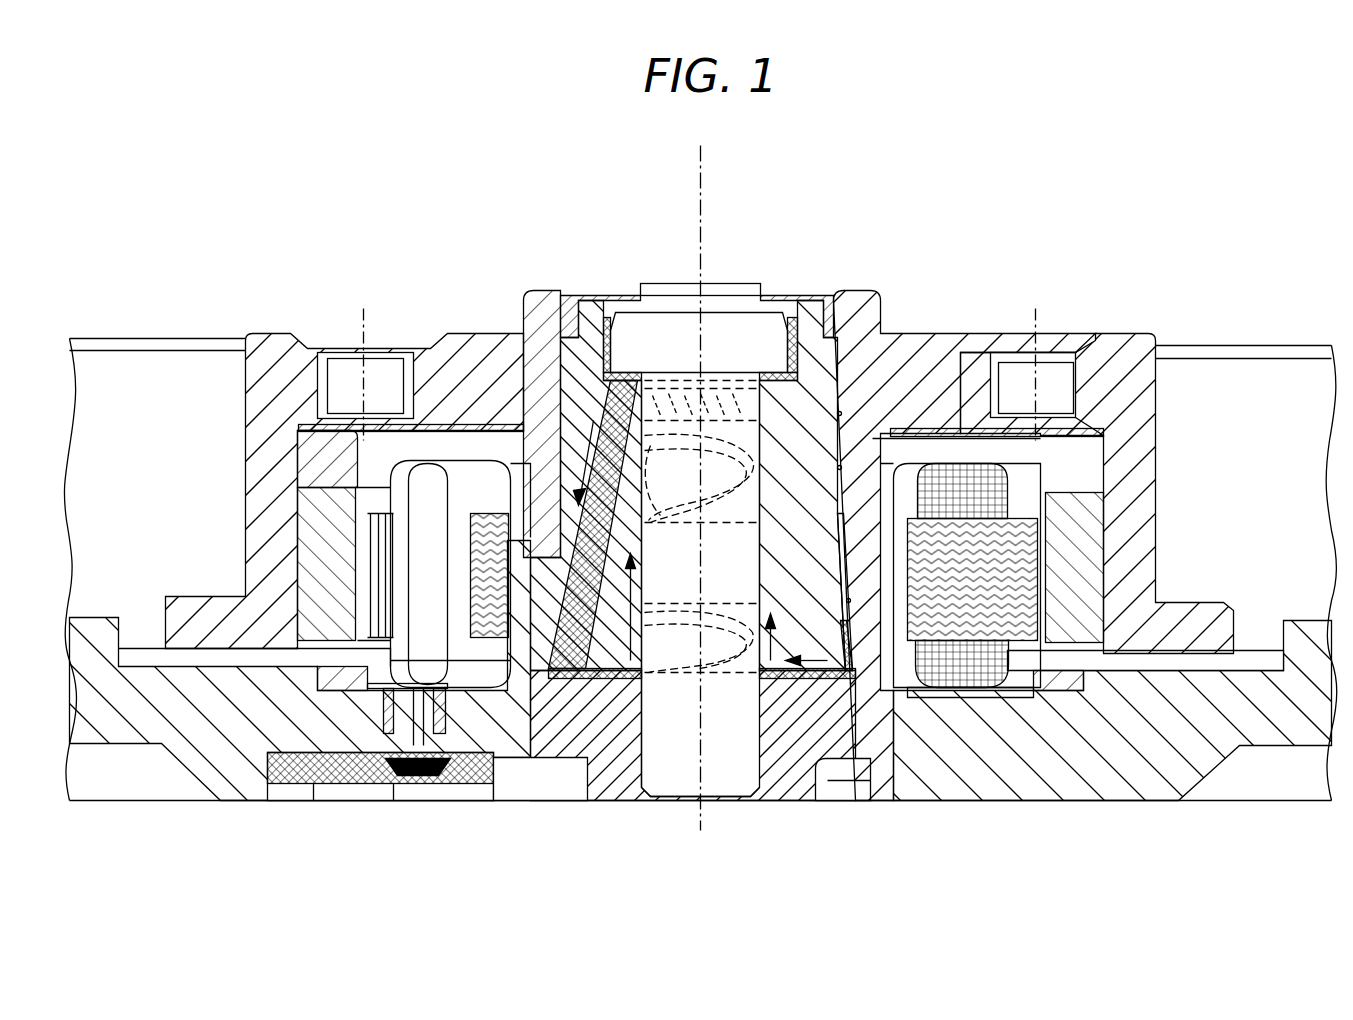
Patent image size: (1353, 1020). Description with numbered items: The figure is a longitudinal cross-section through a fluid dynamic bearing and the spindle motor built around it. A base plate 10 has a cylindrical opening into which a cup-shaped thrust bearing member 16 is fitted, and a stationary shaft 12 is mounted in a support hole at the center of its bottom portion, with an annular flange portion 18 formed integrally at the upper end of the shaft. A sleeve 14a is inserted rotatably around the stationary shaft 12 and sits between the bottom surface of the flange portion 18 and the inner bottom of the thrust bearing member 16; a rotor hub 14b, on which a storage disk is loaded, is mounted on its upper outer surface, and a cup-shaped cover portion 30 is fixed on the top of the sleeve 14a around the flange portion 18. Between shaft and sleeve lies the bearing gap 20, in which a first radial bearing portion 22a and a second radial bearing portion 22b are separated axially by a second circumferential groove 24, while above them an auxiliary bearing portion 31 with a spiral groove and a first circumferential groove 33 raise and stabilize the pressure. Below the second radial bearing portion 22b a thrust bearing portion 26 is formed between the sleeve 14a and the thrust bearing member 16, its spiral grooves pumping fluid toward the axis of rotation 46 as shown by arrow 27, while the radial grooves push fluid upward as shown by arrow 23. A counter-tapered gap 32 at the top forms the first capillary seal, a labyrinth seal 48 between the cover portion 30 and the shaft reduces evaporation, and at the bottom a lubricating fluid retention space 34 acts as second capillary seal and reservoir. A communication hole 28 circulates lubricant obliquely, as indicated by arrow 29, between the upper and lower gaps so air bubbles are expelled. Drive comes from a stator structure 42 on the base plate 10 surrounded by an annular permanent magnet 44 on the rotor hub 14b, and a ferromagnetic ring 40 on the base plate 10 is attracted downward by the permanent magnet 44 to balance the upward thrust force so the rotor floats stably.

The base plate 10 is at (1123, 787).
The stationary shaft 12 is at (730, 775).
The sleeve 14a is at (885, 362).
The rotor hub 14b is at (1133, 352).
The thrust bearing member 16 is at (800, 765).
The flange portion 18 is at (660, 315).
The bearing gap 20 is at (760, 480).
The first radial bearing portion 22a is at (660, 520).
The second radial bearing portion 22b is at (668, 690).
The arrow 23 is at (598, 672).
The second circumferential groove 24 is at (768, 560).
The thrust bearing portion 26 is at (785, 680).
The arrow 27 is at (813, 668).
The communication hole 28 is at (572, 650).
The arrow 29 is at (578, 383).
The cover portion 30 is at (572, 300).
The auxiliary bearing portion 31 is at (672, 405).
The gap 32 is at (618, 300).
The first circumferential groove 33 is at (728, 405).
The lubricating fluid retention space 34 is at (842, 568).
The ferromagnetic ring 40 is at (1060, 688).
The stator structure 42 is at (958, 665).
The permanent magnet 44 is at (1083, 550).
The axis of rotation 46 is at (695, 178).
The labyrinth seal 48 is at (760, 297).